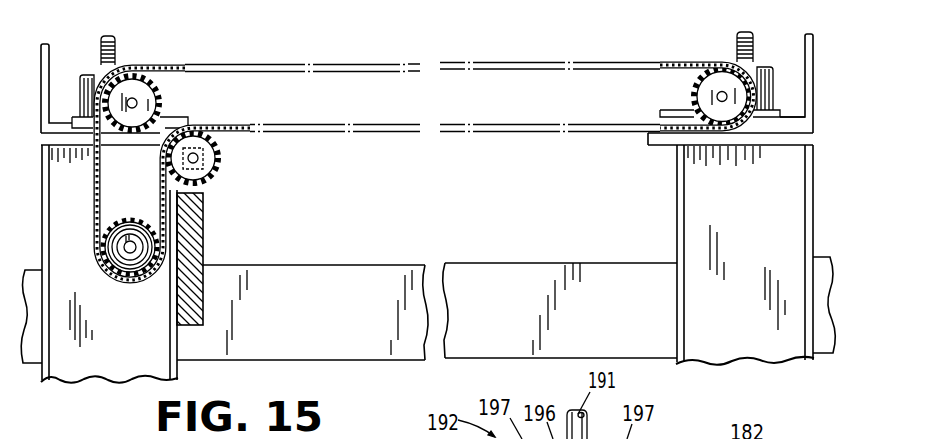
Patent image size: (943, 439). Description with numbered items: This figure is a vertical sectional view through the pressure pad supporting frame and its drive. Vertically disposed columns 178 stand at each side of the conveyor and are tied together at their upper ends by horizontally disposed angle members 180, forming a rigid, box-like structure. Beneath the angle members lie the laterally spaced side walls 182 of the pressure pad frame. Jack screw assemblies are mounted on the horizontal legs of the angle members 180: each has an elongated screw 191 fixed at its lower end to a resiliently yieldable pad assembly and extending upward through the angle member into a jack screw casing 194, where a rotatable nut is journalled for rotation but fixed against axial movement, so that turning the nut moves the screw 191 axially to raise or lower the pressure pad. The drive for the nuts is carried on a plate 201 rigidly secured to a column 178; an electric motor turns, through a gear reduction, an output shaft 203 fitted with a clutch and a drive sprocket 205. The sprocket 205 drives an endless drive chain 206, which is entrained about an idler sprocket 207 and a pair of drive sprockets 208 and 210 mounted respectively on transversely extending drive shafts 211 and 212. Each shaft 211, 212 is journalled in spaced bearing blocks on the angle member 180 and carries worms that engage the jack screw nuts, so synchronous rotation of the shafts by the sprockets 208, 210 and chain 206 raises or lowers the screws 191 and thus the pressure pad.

The column 178 is at (793, 386).
The angle member 180 is at (43, 47).
The side wall 182 is at (553, 278).
The screw 191 is at (113, 45).
The jack screw casing 194 is at (82, 88).
The plate 201 is at (196, 253).
The output shaft 203 is at (133, 255).
The drive sprocket 205 is at (122, 210).
The drive chain 206 is at (93, 172).
The idler sprocket 207 is at (218, 184).
The drive sprocket 208 is at (690, 97).
The drive sprocket 210 is at (168, 104).
The drive shaft 211 is at (718, 95).
The drive shaft 212 is at (134, 101).